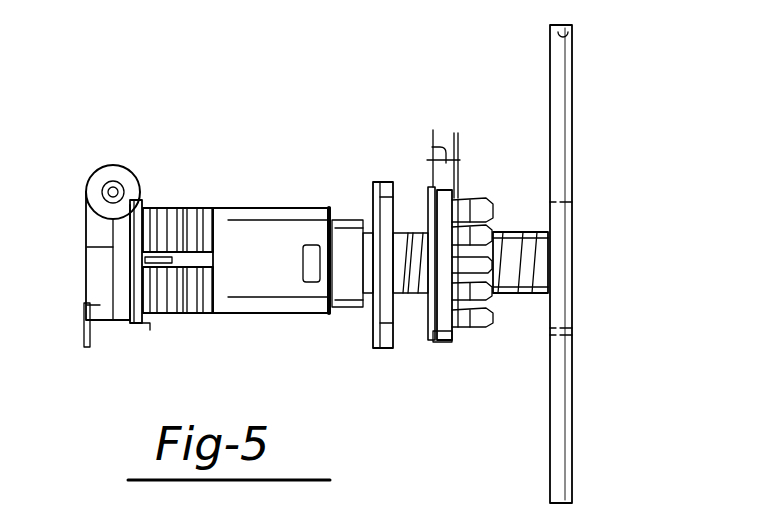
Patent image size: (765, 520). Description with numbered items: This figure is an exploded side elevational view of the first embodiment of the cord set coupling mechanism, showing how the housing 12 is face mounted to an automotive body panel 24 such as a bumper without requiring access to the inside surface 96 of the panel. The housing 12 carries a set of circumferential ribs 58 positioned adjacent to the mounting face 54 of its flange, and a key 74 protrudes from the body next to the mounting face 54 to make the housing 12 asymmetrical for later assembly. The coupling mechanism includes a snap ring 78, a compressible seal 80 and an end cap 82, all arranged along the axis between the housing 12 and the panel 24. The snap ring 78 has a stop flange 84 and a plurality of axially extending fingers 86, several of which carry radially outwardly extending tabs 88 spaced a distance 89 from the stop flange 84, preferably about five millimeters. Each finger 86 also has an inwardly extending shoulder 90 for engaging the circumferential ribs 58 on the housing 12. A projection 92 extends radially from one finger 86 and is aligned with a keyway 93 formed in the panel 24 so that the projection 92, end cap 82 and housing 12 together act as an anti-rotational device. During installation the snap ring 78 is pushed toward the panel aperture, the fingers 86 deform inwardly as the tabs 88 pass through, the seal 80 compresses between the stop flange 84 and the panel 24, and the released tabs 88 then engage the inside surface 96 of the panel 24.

The housing 12 is at (239, 208).
The automotive body panel 24 is at (573, 27).
The mounting face 54 is at (136, 324).
The circumferential ribs 58 is at (307, 258).
The key 74 is at (146, 200).
The snap ring 78 is at (422, 328).
The seal 80 is at (444, 343).
The end cap 82 is at (377, 347).
The stop flange 84 is at (430, 343).
The axially extending fingers 86 is at (488, 197).
The outwardly extending tabs 88 is at (457, 195).
The distance 89 is at (428, 148).
The inwardly extending shoulders 90 is at (500, 228).
The projection 92 is at (468, 338).
The keyway 93 is at (572, 330).
The inside surface 96 is at (572, 442).